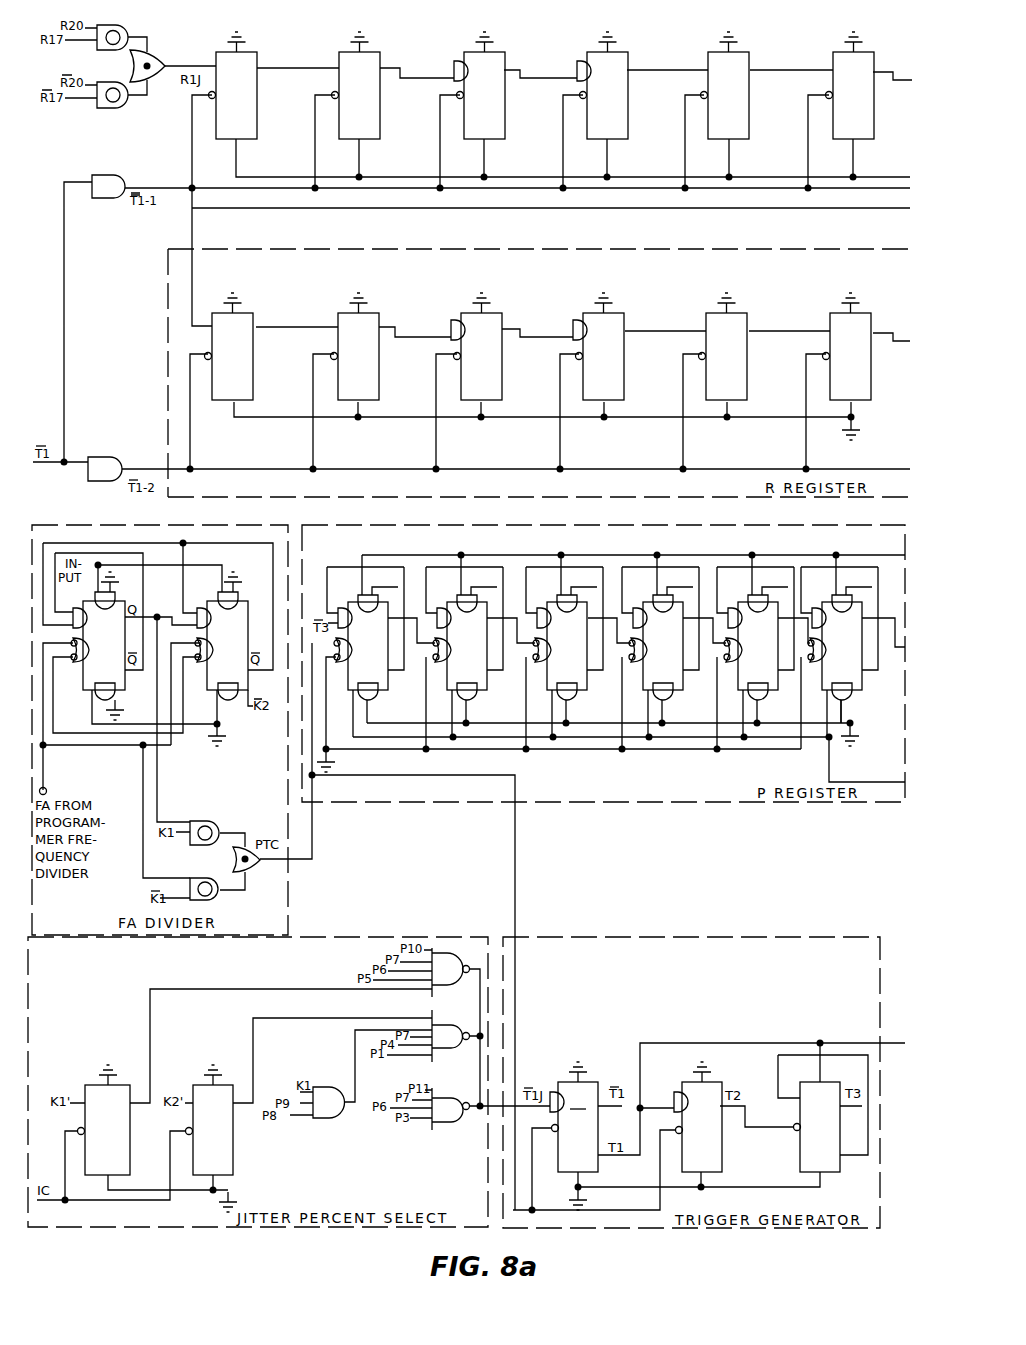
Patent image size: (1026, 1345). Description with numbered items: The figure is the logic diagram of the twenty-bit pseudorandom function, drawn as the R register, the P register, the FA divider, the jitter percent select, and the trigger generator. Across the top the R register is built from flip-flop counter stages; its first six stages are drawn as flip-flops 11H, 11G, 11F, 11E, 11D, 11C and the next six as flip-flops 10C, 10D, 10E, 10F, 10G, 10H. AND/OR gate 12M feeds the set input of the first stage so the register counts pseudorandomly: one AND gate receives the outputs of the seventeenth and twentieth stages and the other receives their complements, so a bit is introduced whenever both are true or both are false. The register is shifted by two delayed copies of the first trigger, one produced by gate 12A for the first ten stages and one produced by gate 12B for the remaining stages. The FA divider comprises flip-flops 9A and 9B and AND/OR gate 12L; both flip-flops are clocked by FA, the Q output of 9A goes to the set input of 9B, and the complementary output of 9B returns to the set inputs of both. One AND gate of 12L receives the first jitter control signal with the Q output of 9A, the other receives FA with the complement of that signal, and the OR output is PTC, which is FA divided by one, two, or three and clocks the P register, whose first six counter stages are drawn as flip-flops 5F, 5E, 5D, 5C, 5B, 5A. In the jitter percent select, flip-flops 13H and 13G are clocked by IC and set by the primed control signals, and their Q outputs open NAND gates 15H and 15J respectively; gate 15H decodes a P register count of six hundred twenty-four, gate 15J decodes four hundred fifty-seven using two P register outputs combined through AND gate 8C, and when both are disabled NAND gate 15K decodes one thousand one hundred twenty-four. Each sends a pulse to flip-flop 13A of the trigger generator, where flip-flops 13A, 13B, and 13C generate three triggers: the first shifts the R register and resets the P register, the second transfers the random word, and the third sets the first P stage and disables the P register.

The AND/OR gate 12M is at (115, 57).
The amplifier/delay gate 12A is at (108, 186).
The amplifier/delay gate 12B is at (105, 469).
The AND/OR gate 12L is at (225, 853).
The flip-flop R1 11H is at (233, 85).
The flip-flop R2 11G is at (356, 85).
The flip-flop R3 11F is at (479, 85).
The flip-flop R4 11E is at (602, 85).
The flip-flop R5 11D is at (725, 85).
The flip-flop R6 11C is at (850, 85).
The flip-flop R11 10C is at (229, 346).
The flip-flop R12 10D is at (355, 346).
The flip-flop R13 10E is at (476, 346).
The flip-flop R14 10F is at (598, 346).
The flip-flop R15 10G is at (723, 346).
The flip-flop R16 10H is at (847, 346).
The flip-flop 9A is at (98, 646).
The flip-flop 9B is at (221, 636).
The P register flip-flop P1 5F is at (365, 646).
The P register flip-flop P2 5E is at (464, 646).
The P register flip-flop P3 5D is at (564, 646).
The P register flip-flop P4 5C is at (660, 646).
The P register flip-flop P5 5B is at (755, 646).
The P register flip-flop P6 5A is at (839, 646).
The flip-flop 13H is at (104, 1120).
The flip-flop 13G is at (210, 1120).
The AND gate 8C is at (328, 1102).
The NAND gate 15H is at (451, 972).
The NAND gate 15J is at (451, 1036).
The NAND gate 15K is at (451, 1109).
The T1-bar flip-flop 13A is at (574, 1117).
The flip-flop 13B is at (698, 1117).
The flip-flop 13C is at (817, 1127).